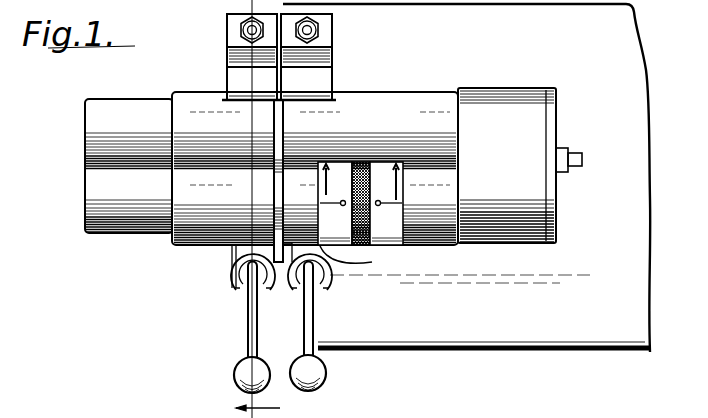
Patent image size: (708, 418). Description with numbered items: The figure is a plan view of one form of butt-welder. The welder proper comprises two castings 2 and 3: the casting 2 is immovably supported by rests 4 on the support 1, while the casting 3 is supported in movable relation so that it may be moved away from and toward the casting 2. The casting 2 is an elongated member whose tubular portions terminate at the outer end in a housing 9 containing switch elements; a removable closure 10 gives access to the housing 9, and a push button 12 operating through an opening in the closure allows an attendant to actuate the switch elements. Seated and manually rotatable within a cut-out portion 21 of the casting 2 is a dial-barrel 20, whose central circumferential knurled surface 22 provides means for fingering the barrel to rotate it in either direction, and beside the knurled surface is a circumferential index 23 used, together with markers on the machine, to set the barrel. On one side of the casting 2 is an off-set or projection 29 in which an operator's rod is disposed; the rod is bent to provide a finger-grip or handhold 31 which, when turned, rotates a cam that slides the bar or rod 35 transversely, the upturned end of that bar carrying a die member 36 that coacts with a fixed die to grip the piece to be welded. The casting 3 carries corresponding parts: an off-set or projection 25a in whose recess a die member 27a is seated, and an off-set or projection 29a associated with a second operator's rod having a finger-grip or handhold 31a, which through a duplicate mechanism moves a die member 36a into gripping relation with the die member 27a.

The support 1 is at (614, 57).
The casting 2 is at (412, 98).
The casting 3 is at (132, 106).
The rests 4 is at (263, 409).
The housing 9 is at (524, 106).
The removable closure 10 is at (548, 206).
The push button 12 is at (575, 152).
The dial-barrel 20 is at (382, 192).
The cut-out portion 21 is at (370, 262).
The knurled surface 22 is at (365, 160).
The index 23 is at (345, 222).
The off-set or projection 25a is at (228, 84).
The die member 27a is at (228, 60).
The off-set or projection 29 is at (318, 290).
The off-set or projection 29a is at (238, 268).
The finger-grip or handhold 31 is at (300, 331).
The finger-grip or handhold 31a is at (248, 338).
The bar or rod 35 is at (300, 209).
The die member 36 is at (320, 27).
The die member 36a is at (228, 34).